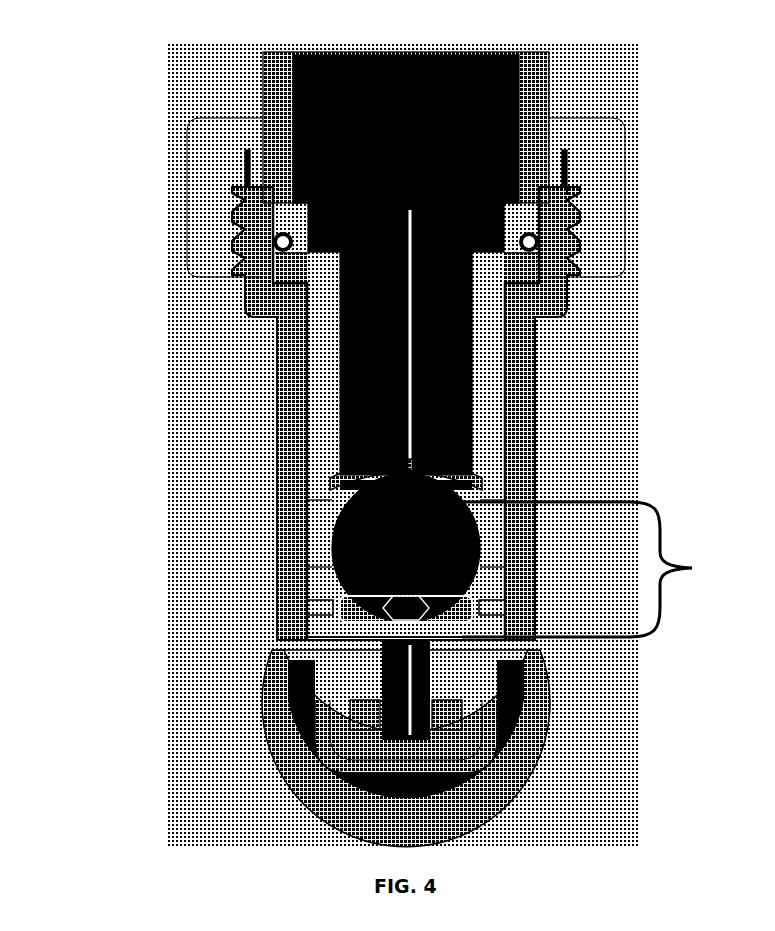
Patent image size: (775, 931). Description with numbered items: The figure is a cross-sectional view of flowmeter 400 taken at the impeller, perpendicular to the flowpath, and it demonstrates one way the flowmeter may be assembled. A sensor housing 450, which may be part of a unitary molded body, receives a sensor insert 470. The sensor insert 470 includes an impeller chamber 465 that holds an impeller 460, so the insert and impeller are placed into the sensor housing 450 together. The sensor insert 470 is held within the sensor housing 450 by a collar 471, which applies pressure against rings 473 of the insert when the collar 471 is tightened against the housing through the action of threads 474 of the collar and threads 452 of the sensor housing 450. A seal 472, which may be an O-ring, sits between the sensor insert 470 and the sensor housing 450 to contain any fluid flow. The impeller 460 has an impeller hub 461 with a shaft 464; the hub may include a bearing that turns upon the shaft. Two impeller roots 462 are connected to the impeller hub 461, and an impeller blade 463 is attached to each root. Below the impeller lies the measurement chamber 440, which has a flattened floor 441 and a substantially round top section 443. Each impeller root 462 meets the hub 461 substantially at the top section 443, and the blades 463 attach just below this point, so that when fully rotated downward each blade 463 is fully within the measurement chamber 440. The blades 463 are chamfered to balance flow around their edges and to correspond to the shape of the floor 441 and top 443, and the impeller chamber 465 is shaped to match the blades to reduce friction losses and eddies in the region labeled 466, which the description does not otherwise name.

The flowmeter 400 is at (176, 86).
The measurement chamber 440 is at (535, 760).
The flattened floor 441 is at (302, 746).
The top section 443 is at (300, 650).
The sensor housing 450 is at (244, 307).
The threads 452 is at (578, 255).
The impeller 460 is at (362, 566).
The impeller hub 461 is at (505, 612).
The impeller roots 462 is at (505, 567).
The impeller blades 463 is at (447, 522).
The shaft 464 is at (428, 606).
The impeller chamber 465 is at (604, 569).
The upper seat 466 is at (458, 496).
The sensor insert 470 is at (535, 68).
The collar 471 is at (616, 163).
The seal 472 is at (568, 244).
The rings 473 is at (548, 148).
The threads 474 is at (578, 203).